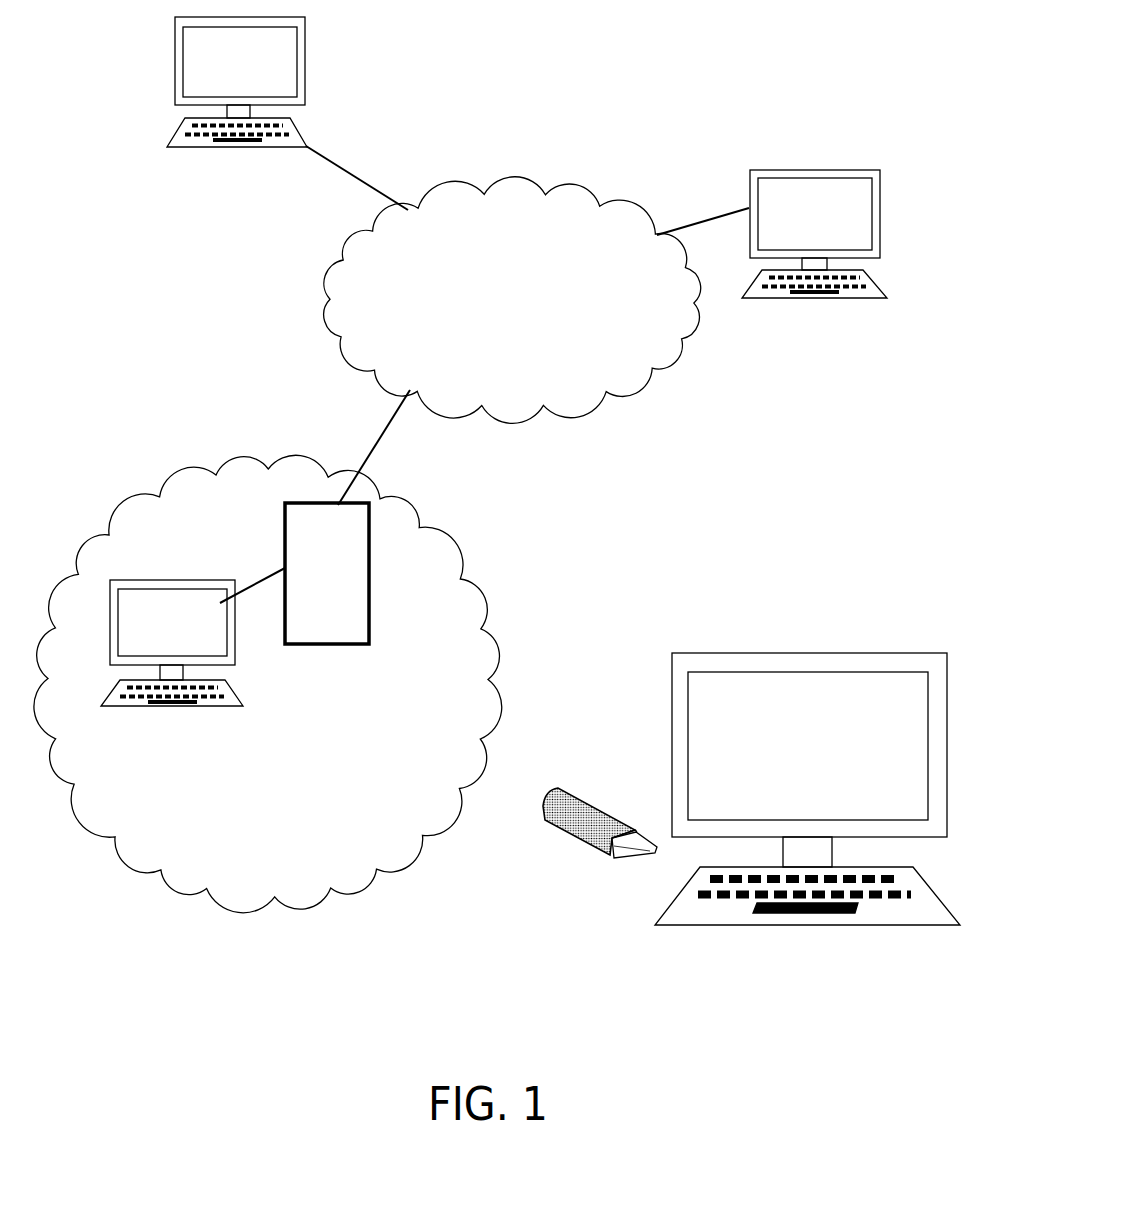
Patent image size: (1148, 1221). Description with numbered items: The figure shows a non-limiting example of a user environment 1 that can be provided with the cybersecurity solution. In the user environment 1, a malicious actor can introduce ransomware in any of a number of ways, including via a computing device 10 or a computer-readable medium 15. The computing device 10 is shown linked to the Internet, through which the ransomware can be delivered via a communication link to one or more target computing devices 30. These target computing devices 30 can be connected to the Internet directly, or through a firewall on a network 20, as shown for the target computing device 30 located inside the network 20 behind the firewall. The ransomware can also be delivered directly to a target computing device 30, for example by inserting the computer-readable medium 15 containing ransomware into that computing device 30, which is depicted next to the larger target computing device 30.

The user environment 1 is at (772, 45).
The computing device 10 is at (222, 70).
The computer-readable medium 15 is at (580, 789).
The network 20 is at (268, 683).
The target computing devices 30 is at (797, 228).